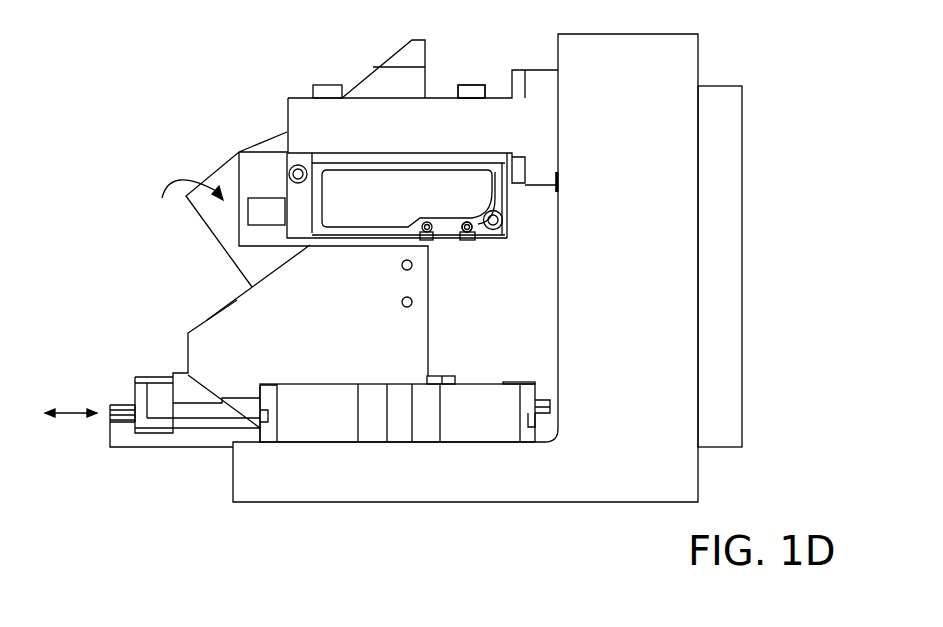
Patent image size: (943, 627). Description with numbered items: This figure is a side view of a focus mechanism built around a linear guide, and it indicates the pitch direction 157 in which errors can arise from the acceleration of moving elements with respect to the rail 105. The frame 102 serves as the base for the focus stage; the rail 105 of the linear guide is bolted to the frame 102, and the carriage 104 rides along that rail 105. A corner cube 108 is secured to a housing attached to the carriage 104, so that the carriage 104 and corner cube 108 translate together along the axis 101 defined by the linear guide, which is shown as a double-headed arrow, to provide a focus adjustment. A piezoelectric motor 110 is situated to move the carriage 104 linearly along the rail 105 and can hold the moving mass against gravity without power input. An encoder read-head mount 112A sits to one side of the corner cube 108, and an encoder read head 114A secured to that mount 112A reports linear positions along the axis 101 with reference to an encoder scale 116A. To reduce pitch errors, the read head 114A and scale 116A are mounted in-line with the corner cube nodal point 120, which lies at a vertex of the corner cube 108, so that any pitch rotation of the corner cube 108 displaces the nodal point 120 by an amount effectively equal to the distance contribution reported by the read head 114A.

The axis 101 is at (70, 415).
The frame 102 is at (698, 480).
The carriage 104 is at (163, 397).
The rail 105 is at (155, 442).
The corner cube 108 is at (372, 80).
The piezoelectric motor 110 is at (330, 420).
The encoder read-head mount 112A is at (468, 85).
The encoder read head 114A is at (450, 210).
The encoder scale 116A is at (238, 150).
The corner cube nodal point 120 is at (190, 197).
The pitch direction 157 is at (162, 198).